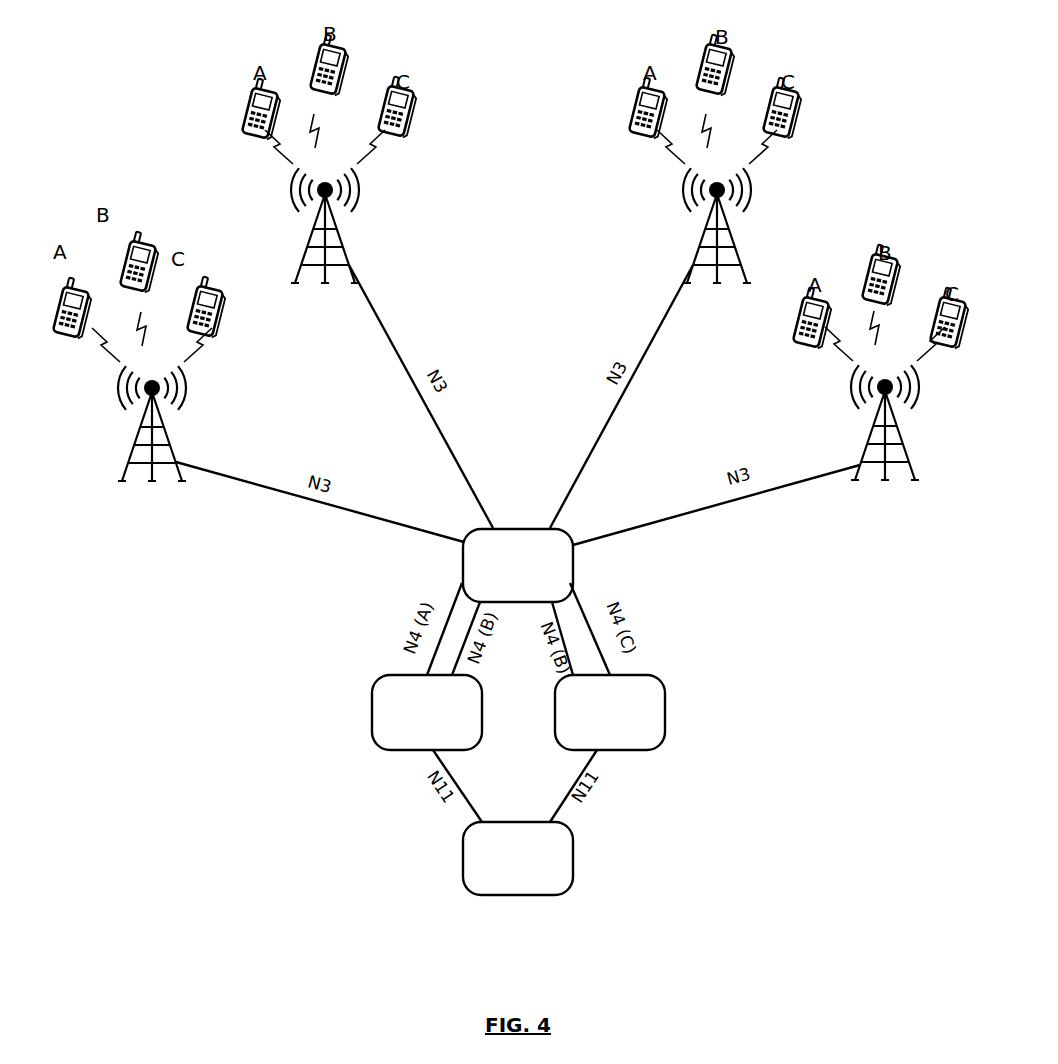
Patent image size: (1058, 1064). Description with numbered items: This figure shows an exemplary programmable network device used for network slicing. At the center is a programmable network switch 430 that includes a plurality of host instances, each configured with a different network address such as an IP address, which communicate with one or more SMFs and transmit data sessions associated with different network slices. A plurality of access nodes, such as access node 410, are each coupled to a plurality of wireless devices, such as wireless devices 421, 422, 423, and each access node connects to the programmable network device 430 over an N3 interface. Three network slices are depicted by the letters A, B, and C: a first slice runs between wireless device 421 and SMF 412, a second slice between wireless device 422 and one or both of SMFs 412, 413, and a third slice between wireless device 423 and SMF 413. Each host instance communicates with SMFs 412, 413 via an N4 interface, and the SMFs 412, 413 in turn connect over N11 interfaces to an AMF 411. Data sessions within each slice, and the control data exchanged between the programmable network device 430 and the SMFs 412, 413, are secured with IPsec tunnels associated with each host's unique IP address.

The access node 410 is at (137, 466).
The AMF (access and mobility management function) 411 is at (518, 858).
The SMF 412 is at (427, 712).
The SMF 413 is at (610, 712).
The wireless device 421 is at (87, 292).
The wireless device 422 is at (139, 246).
The wireless device 423 is at (213, 292).
The programmable network switch 430 is at (518, 565).